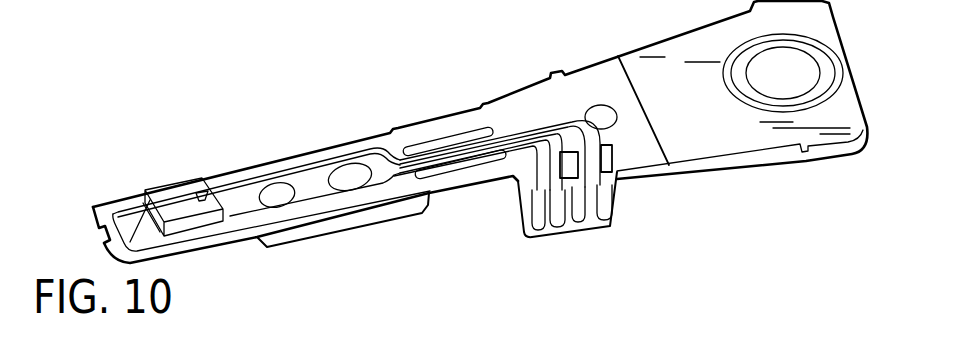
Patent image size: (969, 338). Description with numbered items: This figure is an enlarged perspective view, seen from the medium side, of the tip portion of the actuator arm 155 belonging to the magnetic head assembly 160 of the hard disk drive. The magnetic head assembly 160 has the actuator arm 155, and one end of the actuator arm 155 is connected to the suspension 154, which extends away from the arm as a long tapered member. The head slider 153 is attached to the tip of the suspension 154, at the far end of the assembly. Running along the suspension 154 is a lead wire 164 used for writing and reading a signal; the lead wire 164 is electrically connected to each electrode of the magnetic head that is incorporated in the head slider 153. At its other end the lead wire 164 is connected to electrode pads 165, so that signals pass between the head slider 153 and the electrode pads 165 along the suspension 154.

The head slider 153 is at (170, 183).
The suspension 154 is at (380, 141).
The actuator arm 155 is at (750, 134).
The magnetic head assembly 160 is at (480, 146).
The lead wire 164 is at (313, 211).
The electrode pads 165 is at (580, 215).